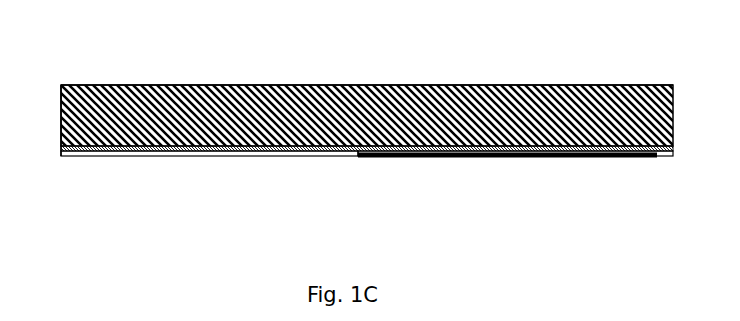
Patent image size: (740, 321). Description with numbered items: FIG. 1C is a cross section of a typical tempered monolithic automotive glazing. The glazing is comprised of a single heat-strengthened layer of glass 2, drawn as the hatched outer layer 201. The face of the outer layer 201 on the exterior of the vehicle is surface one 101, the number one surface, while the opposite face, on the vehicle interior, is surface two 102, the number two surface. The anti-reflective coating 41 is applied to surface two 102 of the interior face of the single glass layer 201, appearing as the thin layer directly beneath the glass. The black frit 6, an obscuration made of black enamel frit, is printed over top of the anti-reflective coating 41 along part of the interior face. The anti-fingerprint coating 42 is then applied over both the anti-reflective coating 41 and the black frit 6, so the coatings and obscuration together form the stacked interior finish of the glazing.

The glass 2 is at (529, 83).
The surface one 101 is at (214, 83).
The outer layer 201 is at (58, 103).
The surface two 102 is at (276, 153).
The anti-reflective coating 41 is at (104, 160).
The anti-fingerprint coating 42 is at (174, 160).
The obscuration/black frit 6 is at (490, 160).